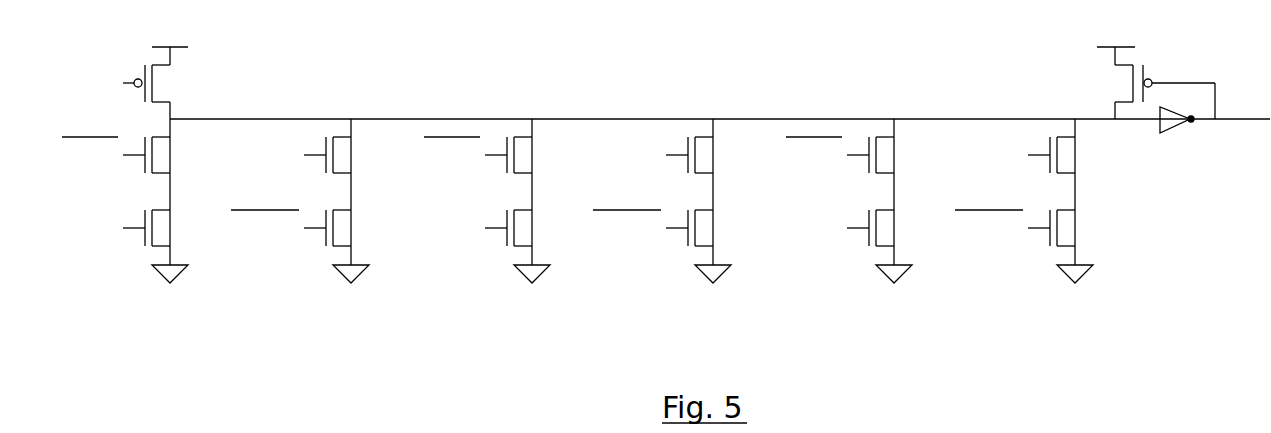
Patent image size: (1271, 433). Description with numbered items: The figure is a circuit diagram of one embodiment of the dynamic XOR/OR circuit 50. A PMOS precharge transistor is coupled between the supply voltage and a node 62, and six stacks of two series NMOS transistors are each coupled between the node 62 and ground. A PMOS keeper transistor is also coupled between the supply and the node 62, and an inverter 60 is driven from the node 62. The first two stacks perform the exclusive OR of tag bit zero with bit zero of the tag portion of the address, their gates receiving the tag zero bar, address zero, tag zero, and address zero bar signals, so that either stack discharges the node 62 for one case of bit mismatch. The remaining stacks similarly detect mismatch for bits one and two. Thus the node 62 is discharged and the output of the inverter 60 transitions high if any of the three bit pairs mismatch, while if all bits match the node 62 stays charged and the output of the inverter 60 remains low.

The dynamic XOR/OR circuit 50 is at (490, 350).
The inverter 60 is at (1206, 137).
The node 62 is at (720, 96).